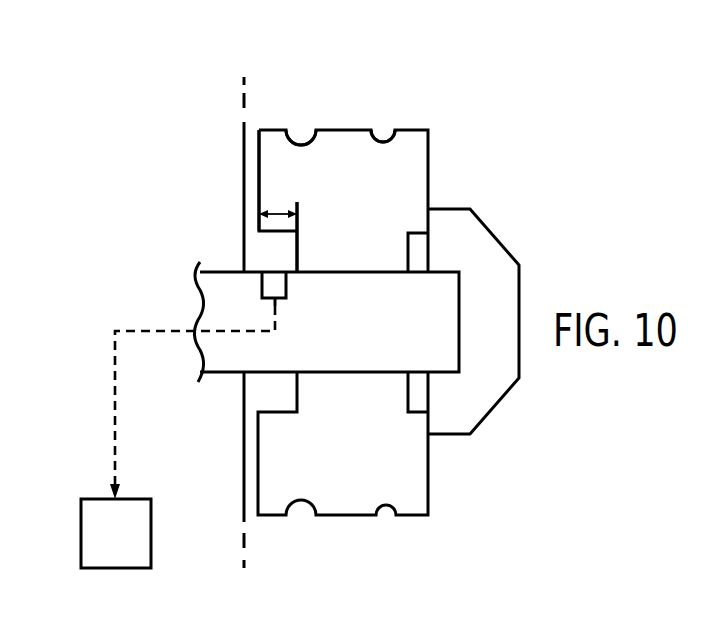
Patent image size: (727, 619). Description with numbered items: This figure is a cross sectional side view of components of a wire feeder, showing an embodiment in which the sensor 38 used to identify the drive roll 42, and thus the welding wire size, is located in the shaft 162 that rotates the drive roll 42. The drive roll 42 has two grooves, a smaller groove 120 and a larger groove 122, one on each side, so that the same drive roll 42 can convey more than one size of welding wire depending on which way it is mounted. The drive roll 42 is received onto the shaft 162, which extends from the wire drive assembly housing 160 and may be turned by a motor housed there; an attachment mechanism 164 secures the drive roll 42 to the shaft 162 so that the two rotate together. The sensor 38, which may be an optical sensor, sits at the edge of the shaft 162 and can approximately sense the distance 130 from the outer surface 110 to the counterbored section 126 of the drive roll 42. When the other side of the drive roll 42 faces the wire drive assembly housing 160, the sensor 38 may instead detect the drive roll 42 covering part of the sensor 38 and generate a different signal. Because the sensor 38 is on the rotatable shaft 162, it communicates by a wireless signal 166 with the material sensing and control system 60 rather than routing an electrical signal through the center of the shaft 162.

The drive roll 42 is at (430, 168).
The larger groove 122 is at (301, 142).
The smaller groove 120 is at (383, 138).
The attachment mechanism 164 is at (497, 238).
The wire drive assembly housing 160 is at (244, 160).
The outer surface 110 is at (259, 180).
The distance 130 is at (278, 210).
The counterbored section 126 is at (299, 252).
The shaft 162 is at (379, 337).
The sensor 38 is at (287, 282).
The wireless signal 166 is at (152, 330).
The material sensing and control system 60 is at (81, 533).